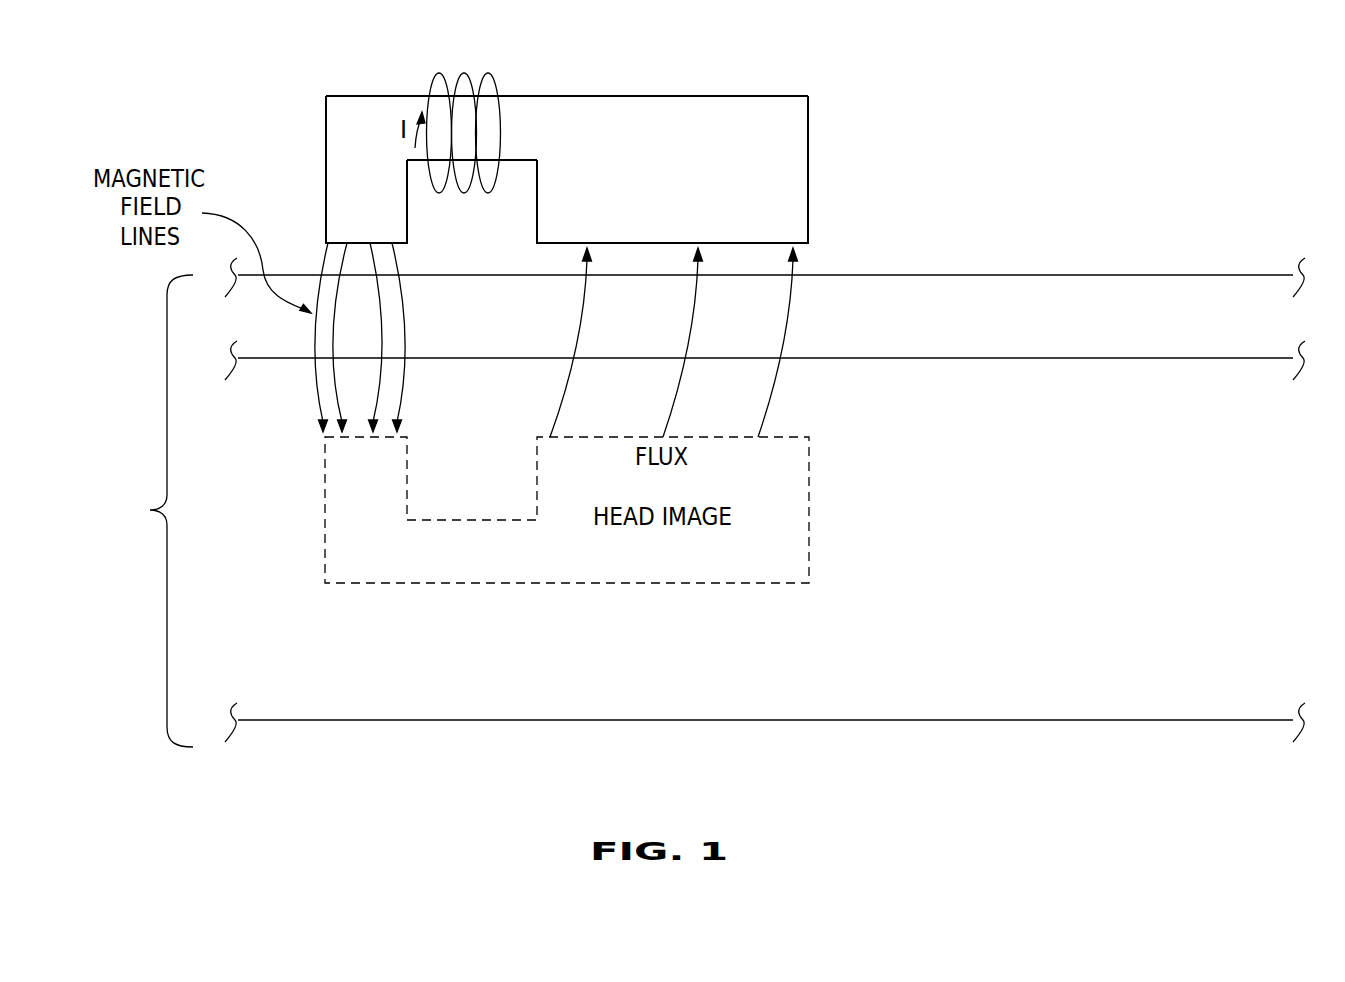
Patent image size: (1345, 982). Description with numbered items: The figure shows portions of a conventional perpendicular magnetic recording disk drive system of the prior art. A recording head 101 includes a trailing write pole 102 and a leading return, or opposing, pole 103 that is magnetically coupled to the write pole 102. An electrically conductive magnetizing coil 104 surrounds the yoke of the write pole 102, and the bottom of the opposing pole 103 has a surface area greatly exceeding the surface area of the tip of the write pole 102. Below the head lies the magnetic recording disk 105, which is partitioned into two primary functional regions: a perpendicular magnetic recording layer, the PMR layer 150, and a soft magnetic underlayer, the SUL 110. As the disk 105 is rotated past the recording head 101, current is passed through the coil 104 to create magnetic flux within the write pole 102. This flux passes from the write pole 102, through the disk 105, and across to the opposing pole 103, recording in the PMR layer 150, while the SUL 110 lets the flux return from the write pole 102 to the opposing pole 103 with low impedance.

The recording head 101 is at (777, 148).
The write pole 102 is at (385, 236).
The opposing pole 103 is at (754, 231).
The magnetizing coil 104 is at (549, 65).
The magnetic recording disk 105 is at (150, 510).
The soft magnetic underlayer 110 is at (1137, 688).
The PMR layer 150 is at (1310, 335).